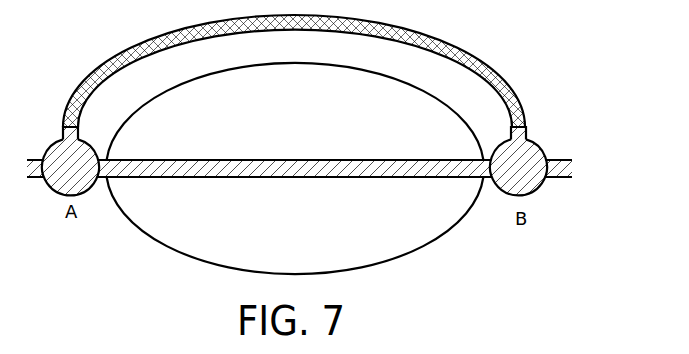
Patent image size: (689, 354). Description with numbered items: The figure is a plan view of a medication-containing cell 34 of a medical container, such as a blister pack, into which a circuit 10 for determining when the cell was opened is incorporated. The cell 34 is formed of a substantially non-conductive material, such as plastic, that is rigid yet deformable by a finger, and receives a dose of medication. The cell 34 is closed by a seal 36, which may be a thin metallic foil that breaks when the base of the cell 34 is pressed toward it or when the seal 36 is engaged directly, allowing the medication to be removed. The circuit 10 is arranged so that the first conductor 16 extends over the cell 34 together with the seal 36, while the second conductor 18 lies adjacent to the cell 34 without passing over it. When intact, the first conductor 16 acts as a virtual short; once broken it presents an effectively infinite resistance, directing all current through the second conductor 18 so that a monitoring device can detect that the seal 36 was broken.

The circuit 10 is at (545, 142).
The first conductor 16 is at (293, 178).
The second conductor 18 is at (466, 76).
The medication-containing cell 34 is at (442, 234).
The seal 36 is at (146, 219).